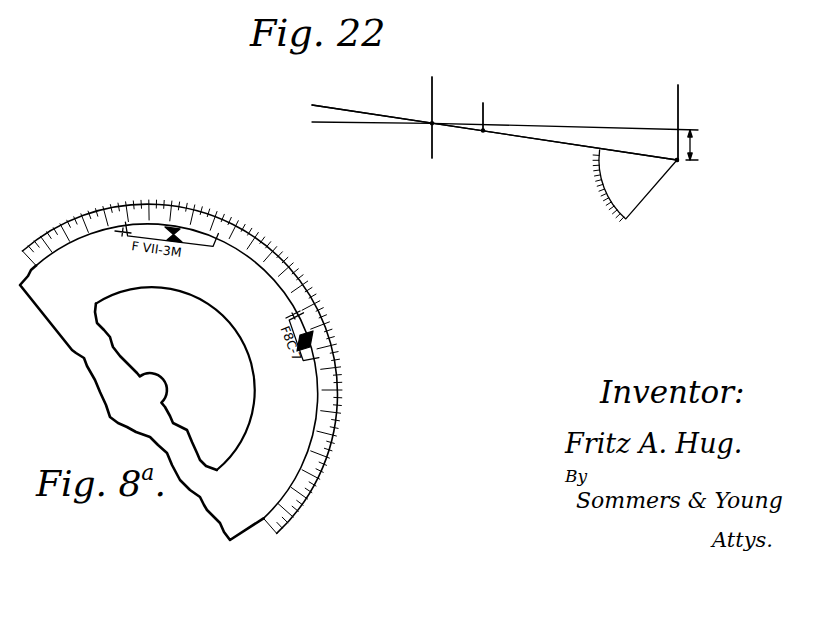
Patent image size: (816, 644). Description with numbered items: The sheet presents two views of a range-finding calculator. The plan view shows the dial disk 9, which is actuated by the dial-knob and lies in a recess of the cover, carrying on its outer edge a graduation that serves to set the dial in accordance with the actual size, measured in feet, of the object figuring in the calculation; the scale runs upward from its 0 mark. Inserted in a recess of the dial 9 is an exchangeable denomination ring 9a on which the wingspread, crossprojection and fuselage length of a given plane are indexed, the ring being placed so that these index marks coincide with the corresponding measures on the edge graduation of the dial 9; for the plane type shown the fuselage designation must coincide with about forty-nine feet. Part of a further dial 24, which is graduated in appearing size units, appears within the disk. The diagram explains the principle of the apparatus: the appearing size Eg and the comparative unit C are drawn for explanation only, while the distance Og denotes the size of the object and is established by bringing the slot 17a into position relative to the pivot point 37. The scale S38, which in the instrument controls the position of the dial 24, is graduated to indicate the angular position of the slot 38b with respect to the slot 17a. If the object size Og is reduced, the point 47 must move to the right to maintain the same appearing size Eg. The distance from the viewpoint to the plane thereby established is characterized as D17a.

In FIG. 22, the point 47 is at (431, 124).
In FIG. 22, the appearing size Eg is at (483, 131).
In FIG. 22, the slot 38b is at (538, 139).
In FIG. 22, the scale S38 is at (599, 167).
In FIG. 22, the pivot point 37 is at (677, 162).
In FIG. 22, the slot 17a is at (650, 129).
In FIG. 22, the size of object Og is at (698, 141).
In FIG. 22, the distance from the viewpoint to the plane D17a is at (433, 88).
In FIG. 22, the comparative unit C is at (433, 107).
In FIG. 8A, the dial disk 9 is at (338, 437).
In FIG. 8A, the denomination ring 9a is at (230, 540).
In FIG. 8A, the dial 24 is at (127, 350).
In FIG. 8A, the zero mark 0 is at (273, 518).